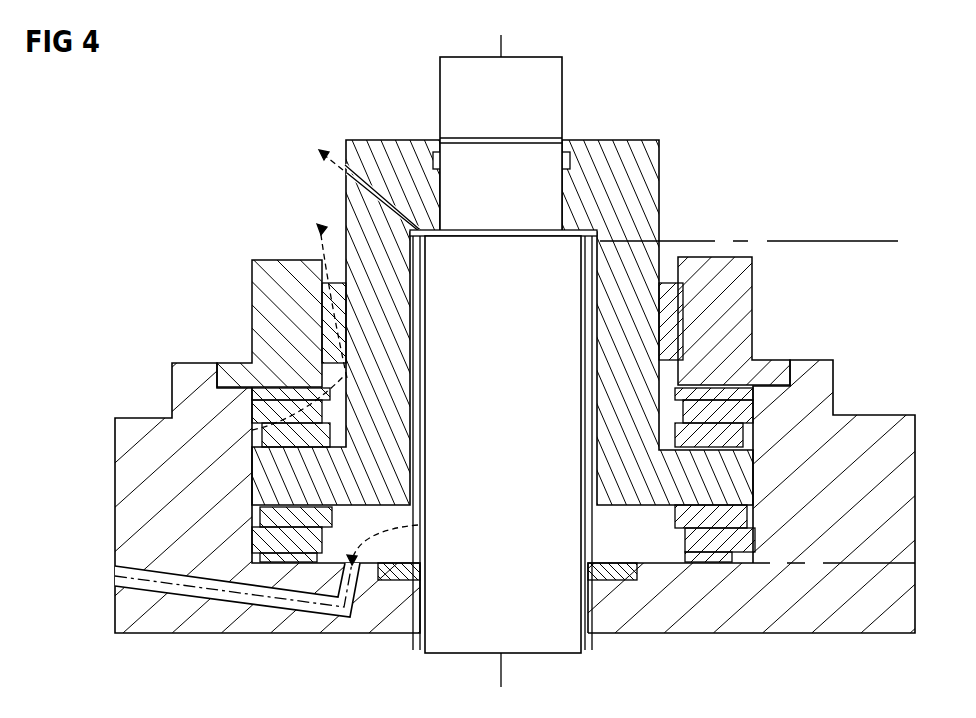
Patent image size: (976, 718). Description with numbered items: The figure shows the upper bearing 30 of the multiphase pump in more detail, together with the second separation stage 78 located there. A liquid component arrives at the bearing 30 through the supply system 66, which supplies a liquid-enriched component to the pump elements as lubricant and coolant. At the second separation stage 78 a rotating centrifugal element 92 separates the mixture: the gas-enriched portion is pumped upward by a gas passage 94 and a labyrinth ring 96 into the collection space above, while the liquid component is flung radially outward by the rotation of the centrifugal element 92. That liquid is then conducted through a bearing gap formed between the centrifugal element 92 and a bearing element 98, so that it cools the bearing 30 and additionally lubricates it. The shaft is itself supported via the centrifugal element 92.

The upper bearing 30 is at (772, 153).
The supply system 66 is at (157, 577).
The second separation stage 78 is at (283, 194).
The centrifugal element 92 is at (632, 170).
The gas passage 94 is at (427, 348).
The labyrinth ring 96 is at (587, 272).
The bearing element 98 is at (672, 304).